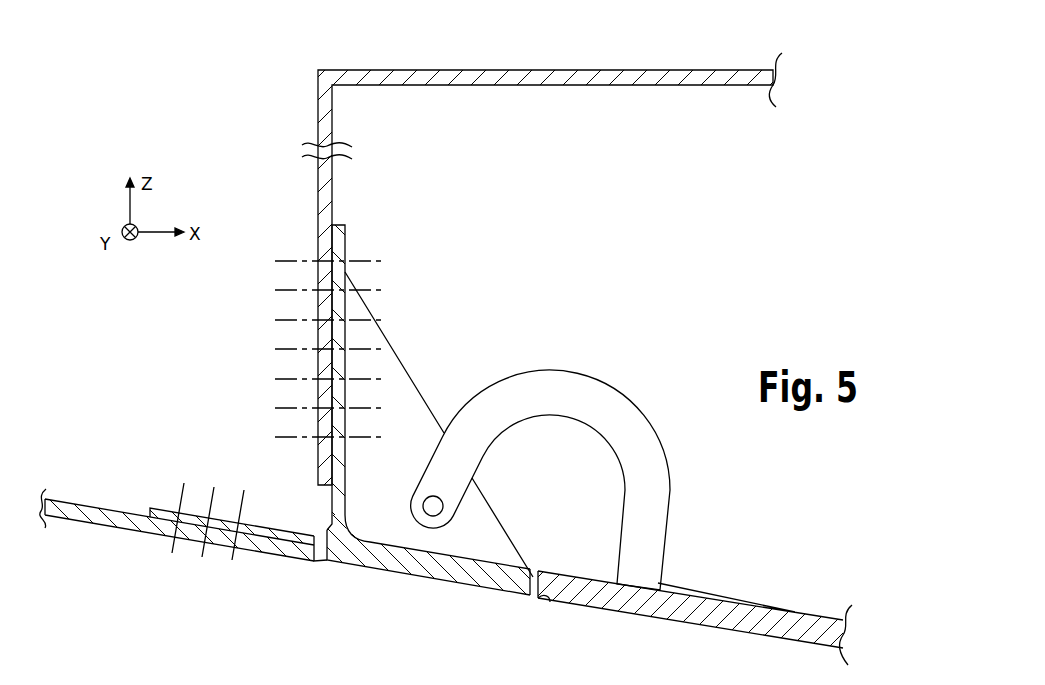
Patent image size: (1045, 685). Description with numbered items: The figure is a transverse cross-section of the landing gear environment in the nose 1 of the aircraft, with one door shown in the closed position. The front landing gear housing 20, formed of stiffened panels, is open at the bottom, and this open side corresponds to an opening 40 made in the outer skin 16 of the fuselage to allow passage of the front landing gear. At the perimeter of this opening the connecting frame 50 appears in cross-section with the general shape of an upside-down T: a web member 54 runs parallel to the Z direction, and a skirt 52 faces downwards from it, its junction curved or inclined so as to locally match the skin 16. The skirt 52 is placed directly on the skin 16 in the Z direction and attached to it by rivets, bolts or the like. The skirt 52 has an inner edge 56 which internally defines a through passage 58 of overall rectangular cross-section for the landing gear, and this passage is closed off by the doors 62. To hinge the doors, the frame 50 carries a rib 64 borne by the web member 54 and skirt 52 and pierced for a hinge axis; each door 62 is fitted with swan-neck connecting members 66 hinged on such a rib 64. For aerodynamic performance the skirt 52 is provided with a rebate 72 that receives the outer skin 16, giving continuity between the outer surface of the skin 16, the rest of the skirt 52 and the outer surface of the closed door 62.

The nose 1 is at (247, 94).
The outer skin 16 is at (82, 513).
The landing gear housing 20 is at (373, 70).
The opening 40 is at (317, 556).
The connecting frame 50 is at (440, 592).
The skirt 52 is at (388, 558).
The web member 54 is at (338, 250).
The inner edge 56 is at (545, 598).
The through passage 58 is at (538, 576).
The door 62 is at (722, 617).
The rib 64 is at (383, 392).
The swan-neck connecting member 66 is at (610, 412).
The rebate 72 is at (318, 534).